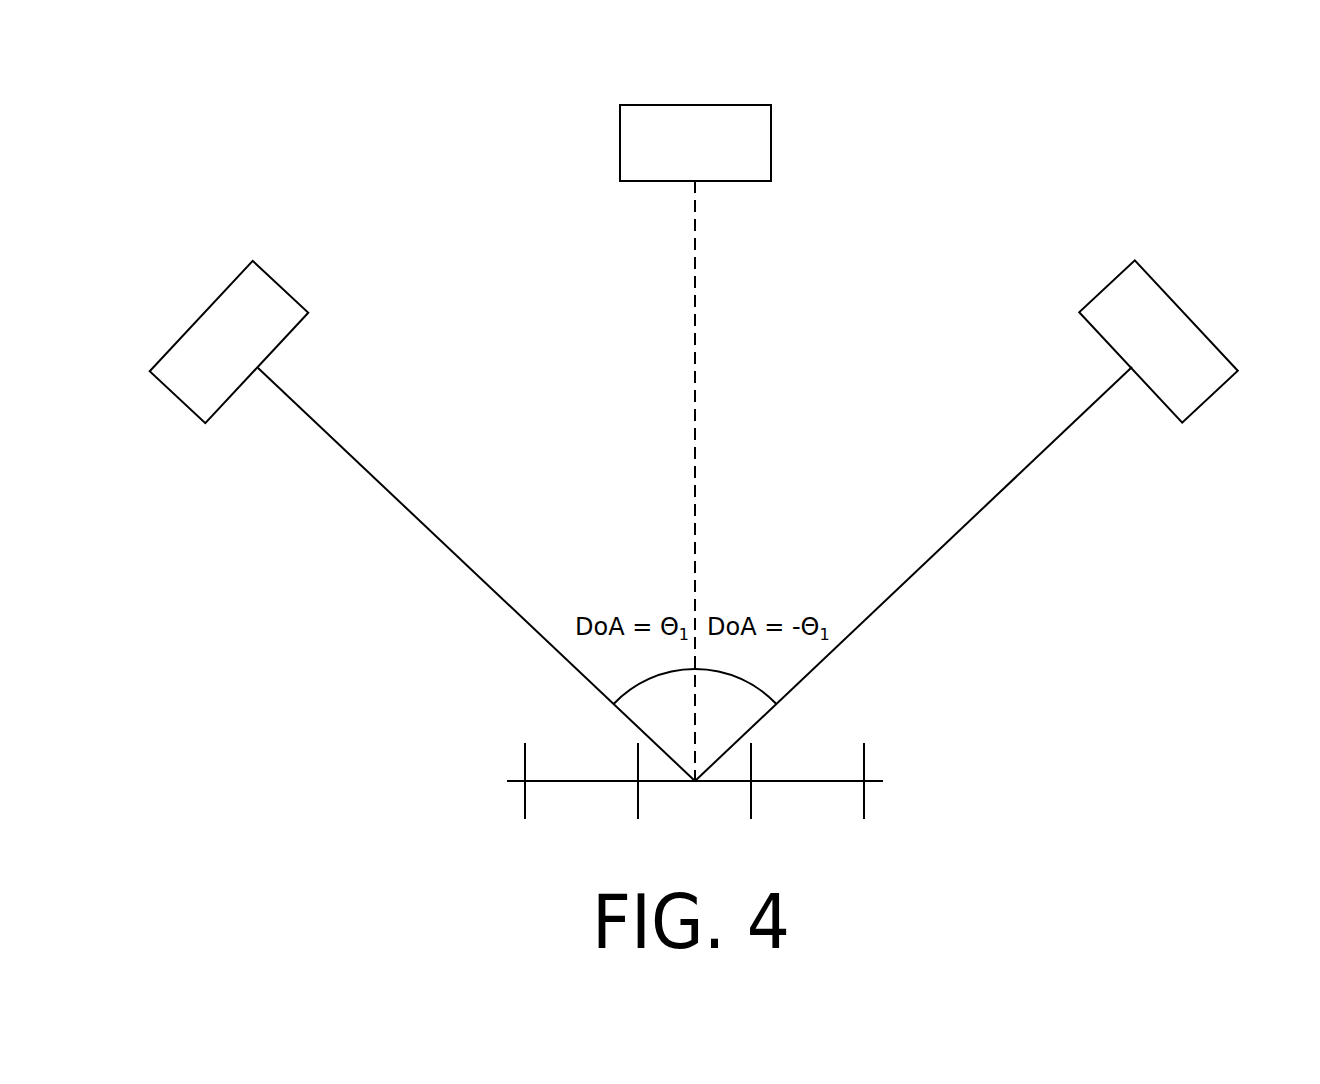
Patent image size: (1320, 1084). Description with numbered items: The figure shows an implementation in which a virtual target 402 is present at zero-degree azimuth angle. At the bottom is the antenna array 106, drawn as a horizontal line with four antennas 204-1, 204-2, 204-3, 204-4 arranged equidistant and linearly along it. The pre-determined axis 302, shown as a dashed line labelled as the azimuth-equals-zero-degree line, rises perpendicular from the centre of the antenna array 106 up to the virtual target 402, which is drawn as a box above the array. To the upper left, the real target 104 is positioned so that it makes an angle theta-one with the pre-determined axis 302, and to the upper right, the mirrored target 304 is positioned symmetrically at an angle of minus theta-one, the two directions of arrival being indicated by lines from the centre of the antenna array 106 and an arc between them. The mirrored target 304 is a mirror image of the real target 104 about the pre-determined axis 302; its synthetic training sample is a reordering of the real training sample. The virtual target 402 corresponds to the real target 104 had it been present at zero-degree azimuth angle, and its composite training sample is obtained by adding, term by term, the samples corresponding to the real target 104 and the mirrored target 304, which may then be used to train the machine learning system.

The virtual target 402 is at (745, 101).
The real target 104 is at (265, 260).
The mirrored target 304 is at (1160, 267).
The pre-determined axis 302 is at (698, 291).
The antenna array 106 is at (729, 789).
The antenna 204-1 is at (525, 798).
The antenna 204-2 is at (638, 798).
The antenna 204-3 is at (751, 798).
The antenna 204-4 is at (864, 798).